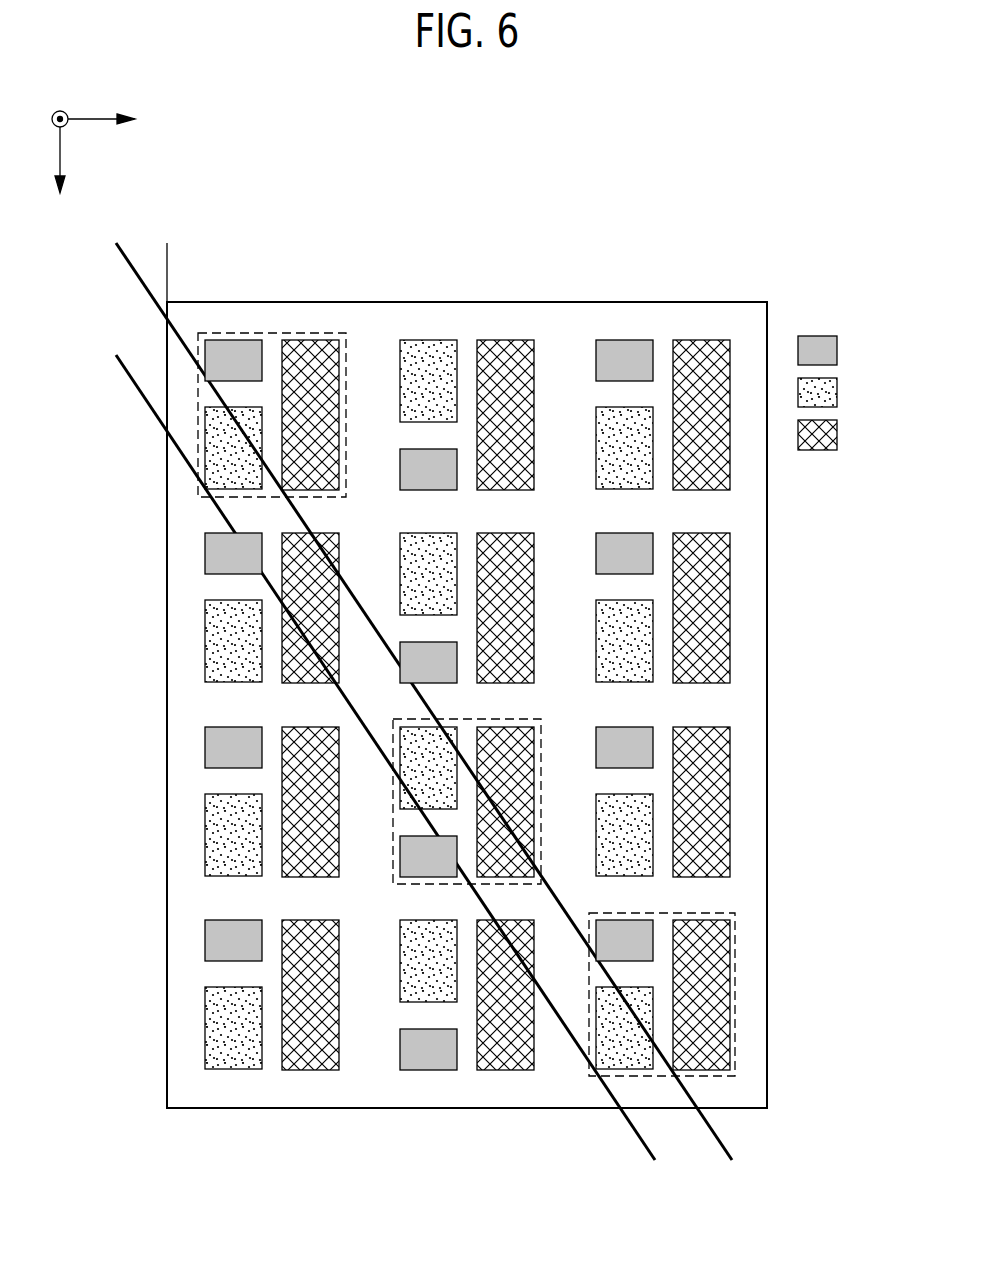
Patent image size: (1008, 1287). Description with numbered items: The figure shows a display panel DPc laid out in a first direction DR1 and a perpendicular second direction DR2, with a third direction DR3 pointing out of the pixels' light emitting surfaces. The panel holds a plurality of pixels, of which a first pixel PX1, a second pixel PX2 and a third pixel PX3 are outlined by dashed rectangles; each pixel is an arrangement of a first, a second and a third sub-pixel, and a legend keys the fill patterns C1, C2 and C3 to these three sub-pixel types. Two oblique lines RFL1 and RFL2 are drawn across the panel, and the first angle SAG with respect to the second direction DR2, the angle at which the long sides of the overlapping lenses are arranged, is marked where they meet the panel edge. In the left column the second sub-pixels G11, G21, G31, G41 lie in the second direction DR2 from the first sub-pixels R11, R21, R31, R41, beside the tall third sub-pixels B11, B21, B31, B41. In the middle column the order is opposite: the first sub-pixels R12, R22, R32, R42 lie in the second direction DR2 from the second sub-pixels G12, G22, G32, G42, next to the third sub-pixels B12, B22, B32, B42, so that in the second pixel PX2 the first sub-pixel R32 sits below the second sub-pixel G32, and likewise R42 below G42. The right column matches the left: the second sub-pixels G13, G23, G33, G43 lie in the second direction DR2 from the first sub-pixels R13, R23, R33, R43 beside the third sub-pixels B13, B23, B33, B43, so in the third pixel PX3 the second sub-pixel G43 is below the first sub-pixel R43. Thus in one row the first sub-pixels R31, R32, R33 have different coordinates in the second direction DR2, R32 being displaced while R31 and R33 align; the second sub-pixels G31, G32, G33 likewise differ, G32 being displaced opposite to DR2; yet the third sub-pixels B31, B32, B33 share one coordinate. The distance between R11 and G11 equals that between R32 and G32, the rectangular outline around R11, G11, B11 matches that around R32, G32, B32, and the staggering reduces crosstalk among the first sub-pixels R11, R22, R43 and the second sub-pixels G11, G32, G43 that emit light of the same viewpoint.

The first direction DR1 is at (120, 120).
The second direction DR2 is at (61, 173).
The third direction DR3 is at (61, 106).
The display panel DPc is at (378, 302).
The first angle SAG is at (167, 273).
The first reflection line RFL1 is at (152, 297).
The second reflection line RFL2 is at (152, 409).
The first pixel PX1 is at (272, 333).
The second pixel PX2 is at (515, 718).
The third pixel PX3 is at (735, 963).
The first color (red) light emitting element C1 is at (839, 351).
The second color (green) light emitting element C2 is at (839, 393).
The third color (blue) light emitting element C3 is at (839, 435).
The first sub-pixel R11 is at (233, 360).
The second sub-pixel G11 is at (233, 448).
The third sub-pixel B11 is at (310, 415).
The first sub-pixel R12 is at (428, 469).
The second sub-pixel G12 is at (428, 381).
The third sub-pixel B12 is at (505, 415).
The first sub-pixel R13 is at (624, 360).
The second sub-pixel G13 is at (624, 448).
The third sub-pixel B13 is at (701, 415).
The first sub-pixel R21 is at (233, 553).
The second sub-pixel G21 is at (233, 641).
The third sub-pixel B21 is at (310, 608).
The first sub-pixel R22 is at (428, 662).
The second sub-pixel G22 is at (428, 574).
The third sub-pixel B22 is at (505, 608).
The first sub-pixel R23 is at (624, 553).
The second sub-pixel G23 is at (624, 641).
The third sub-pixel B23 is at (701, 608).
The first sub-pixel R31 is at (233, 747).
The second sub-pixel G31 is at (233, 835).
The third sub-pixel B31 is at (310, 802).
The first sub-pixel R32 is at (428, 856).
The second sub-pixel G32 is at (428, 768).
The third sub-pixel B32 is at (505, 802).
The first sub-pixel R33 is at (624, 747).
The second sub-pixel G33 is at (624, 835).
The third sub-pixel B33 is at (701, 802).
The first sub-pixel R41 is at (233, 940).
The second sub-pixel G41 is at (233, 1028).
The third sub-pixel B41 is at (310, 995).
The first sub-pixel R42 is at (428, 1049).
The second sub-pixel G42 is at (428, 961).
The third sub-pixel B42 is at (505, 995).
The first sub-pixel R43 is at (624, 940).
The second sub-pixel G43 is at (624, 1028).
The third sub-pixel B43 is at (701, 995).